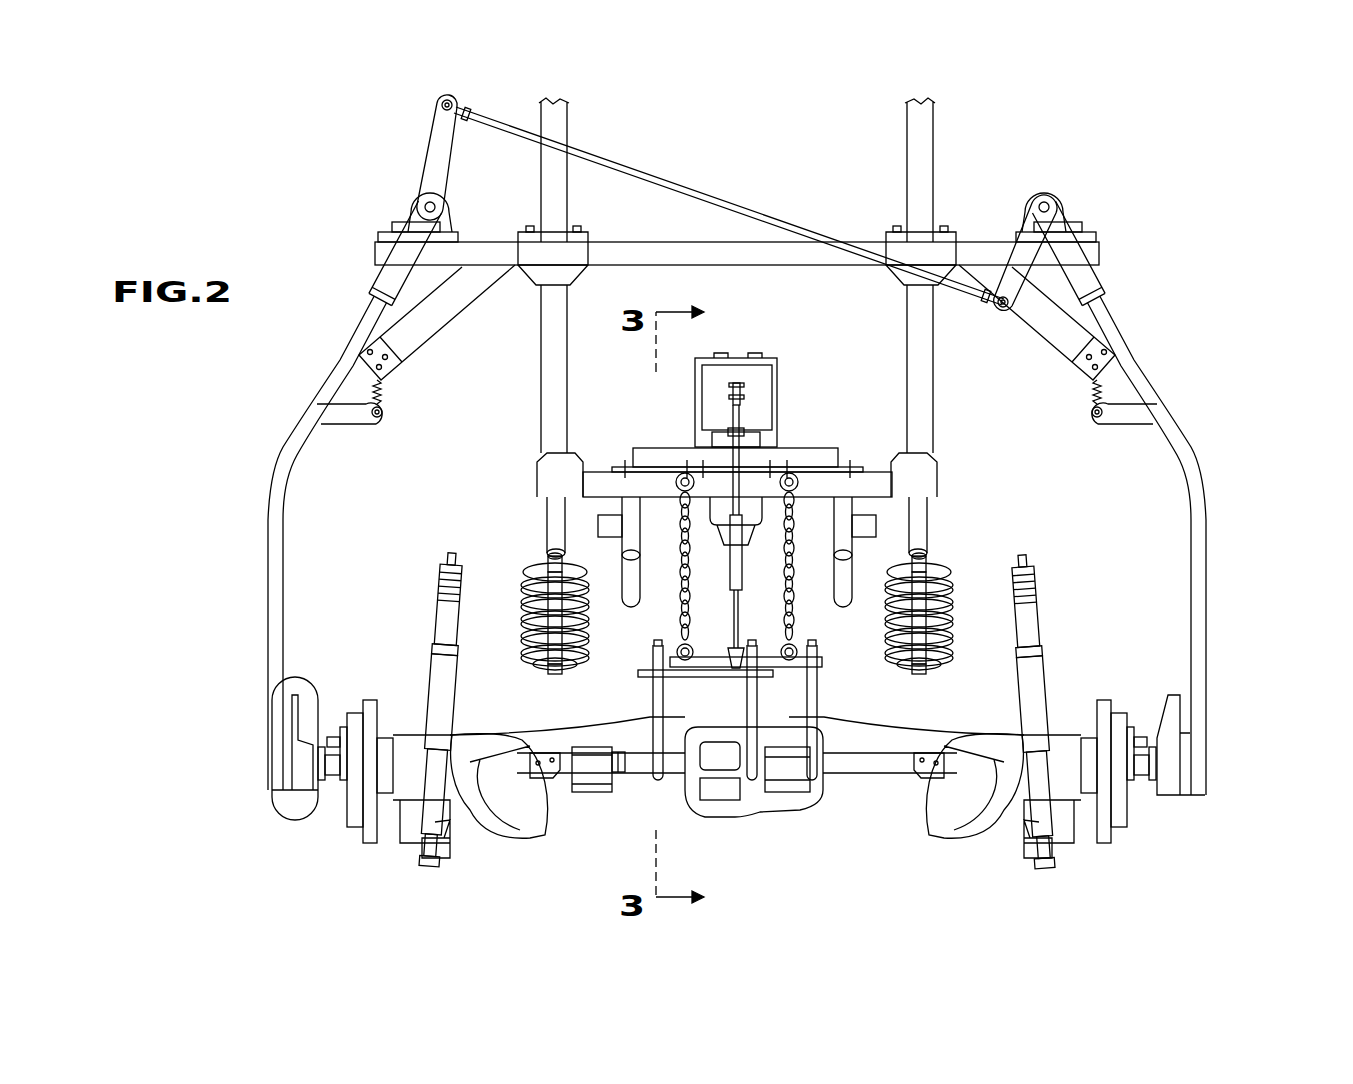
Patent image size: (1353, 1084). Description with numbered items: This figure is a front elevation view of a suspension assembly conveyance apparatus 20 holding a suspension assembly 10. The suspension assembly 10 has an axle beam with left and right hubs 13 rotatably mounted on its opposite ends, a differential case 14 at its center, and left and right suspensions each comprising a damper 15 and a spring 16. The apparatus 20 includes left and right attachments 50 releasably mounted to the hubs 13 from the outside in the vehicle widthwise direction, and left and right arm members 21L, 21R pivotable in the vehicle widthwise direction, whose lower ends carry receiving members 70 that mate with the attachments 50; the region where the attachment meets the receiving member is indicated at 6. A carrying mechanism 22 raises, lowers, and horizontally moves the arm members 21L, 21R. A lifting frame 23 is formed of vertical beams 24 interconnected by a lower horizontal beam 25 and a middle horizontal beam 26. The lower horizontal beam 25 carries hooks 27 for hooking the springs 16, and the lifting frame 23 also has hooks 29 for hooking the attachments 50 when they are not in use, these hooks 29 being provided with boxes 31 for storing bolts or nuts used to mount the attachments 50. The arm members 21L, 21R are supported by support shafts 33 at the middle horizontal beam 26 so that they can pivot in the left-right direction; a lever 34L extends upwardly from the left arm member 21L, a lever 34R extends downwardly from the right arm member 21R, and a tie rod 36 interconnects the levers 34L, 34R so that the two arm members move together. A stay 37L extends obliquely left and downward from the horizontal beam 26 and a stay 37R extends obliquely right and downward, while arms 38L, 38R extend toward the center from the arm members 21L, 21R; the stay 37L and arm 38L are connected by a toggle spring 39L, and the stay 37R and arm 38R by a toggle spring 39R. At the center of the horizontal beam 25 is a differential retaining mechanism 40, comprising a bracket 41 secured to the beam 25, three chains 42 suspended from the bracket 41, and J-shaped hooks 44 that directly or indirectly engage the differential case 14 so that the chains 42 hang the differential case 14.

The wheel mounting portion 6 is at (281, 813).
The suspension assembly 10 is at (767, 824).
The hub 13 is at (356, 830).
The differential case 14 is at (722, 808).
The damper 15 is at (437, 668).
The spring 16 is at (522, 578).
The suspension assembly conveyance apparatus 20 is at (242, 170).
The left arm member 21L is at (266, 526).
The right arm member 21R is at (1207, 526).
The carrying mechanism 22 is at (942, 136).
The lifting frame 23 is at (568, 125).
The vertical beam 24 is at (540, 382).
The lower horizontal beam 25 is at (870, 462).
The middle horizontal beam 26 is at (746, 268).
The hook 27 is at (548, 550).
The hook 29 is at (630, 602).
The box 31 is at (608, 526).
The support shaft 33 is at (428, 207).
The lever 34L is at (438, 142).
The lever 34R is at (1017, 260).
The tie rod 36 is at (730, 204).
The stay 37L is at (448, 306).
The stay 37R is at (1042, 323).
The arm 38L is at (355, 422).
The arm 38R is at (1130, 422).
The toggle spring 39L is at (385, 388).
The toggle spring 39R is at (1089, 388).
The differential retaining mechanism 40 is at (800, 376).
The bracket 41 is at (657, 452).
The chain 42 is at (678, 592).
The J-shaped hook 44 is at (654, 787).
The attachment 50 is at (325, 778).
The receiving member 70 is at (300, 757).